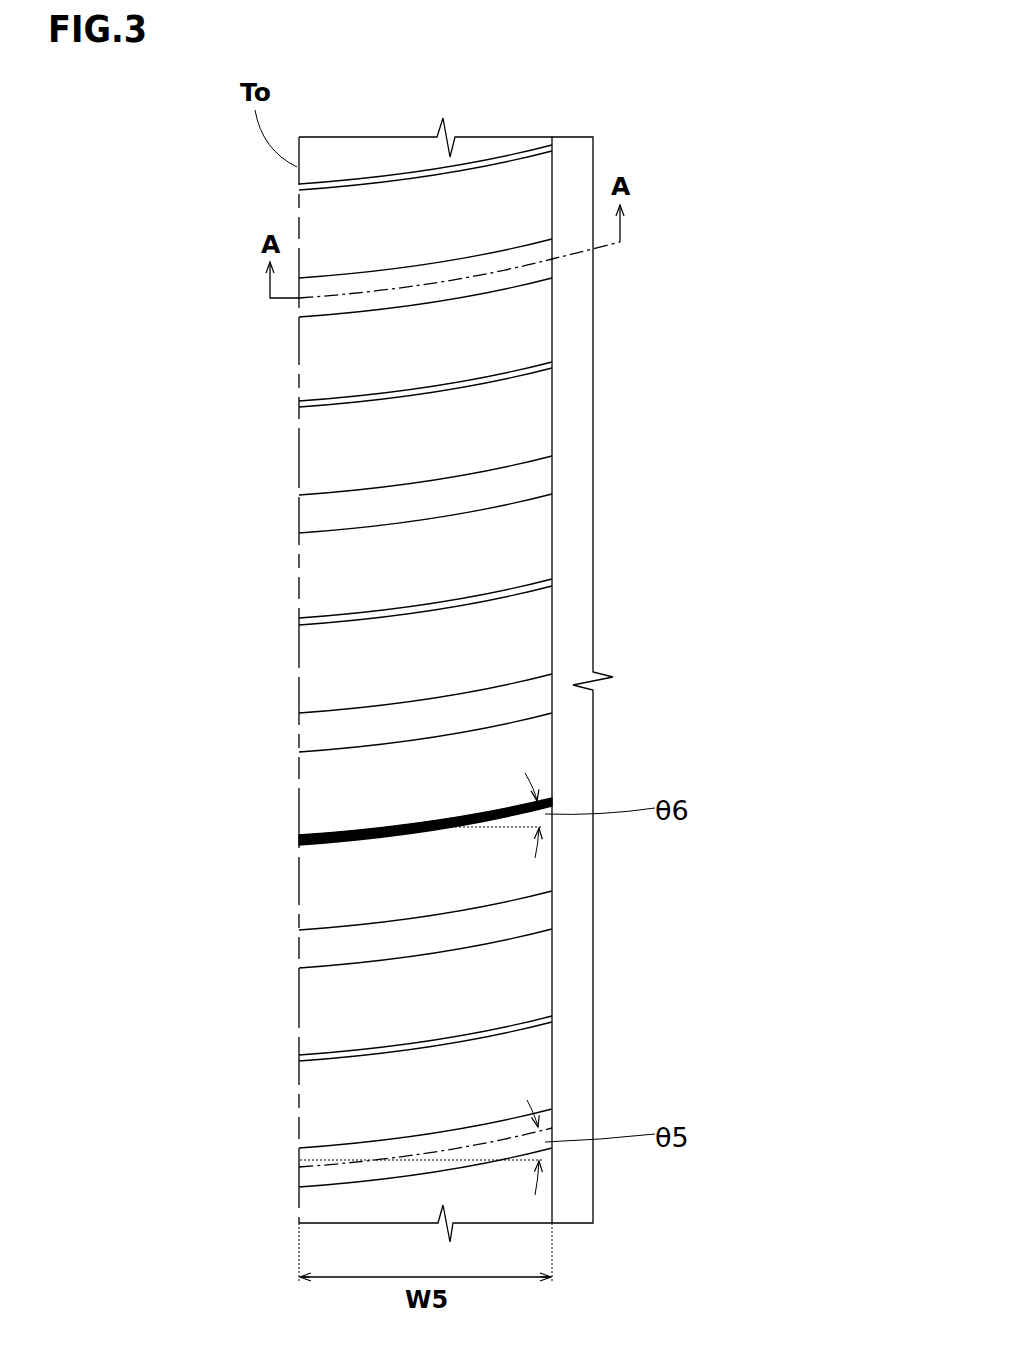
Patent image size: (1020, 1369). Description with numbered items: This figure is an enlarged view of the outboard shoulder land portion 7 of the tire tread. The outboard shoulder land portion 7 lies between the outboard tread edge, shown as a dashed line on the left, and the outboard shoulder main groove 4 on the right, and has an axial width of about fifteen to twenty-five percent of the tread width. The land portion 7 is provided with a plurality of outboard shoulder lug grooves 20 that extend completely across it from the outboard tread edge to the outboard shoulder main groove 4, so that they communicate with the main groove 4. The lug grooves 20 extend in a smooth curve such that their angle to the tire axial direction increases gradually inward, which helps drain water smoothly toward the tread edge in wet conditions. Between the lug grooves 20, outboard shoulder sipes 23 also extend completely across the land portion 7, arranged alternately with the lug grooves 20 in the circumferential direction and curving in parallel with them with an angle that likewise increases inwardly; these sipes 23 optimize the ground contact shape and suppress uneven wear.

The outboard shoulder main groove 4 is at (573, 187).
The outboard shoulder land portion 7 is at (400, 220).
The outboard shoulder lug grooves 20 is at (430, 291).
The outboard shoulder sipes 23 is at (417, 392).